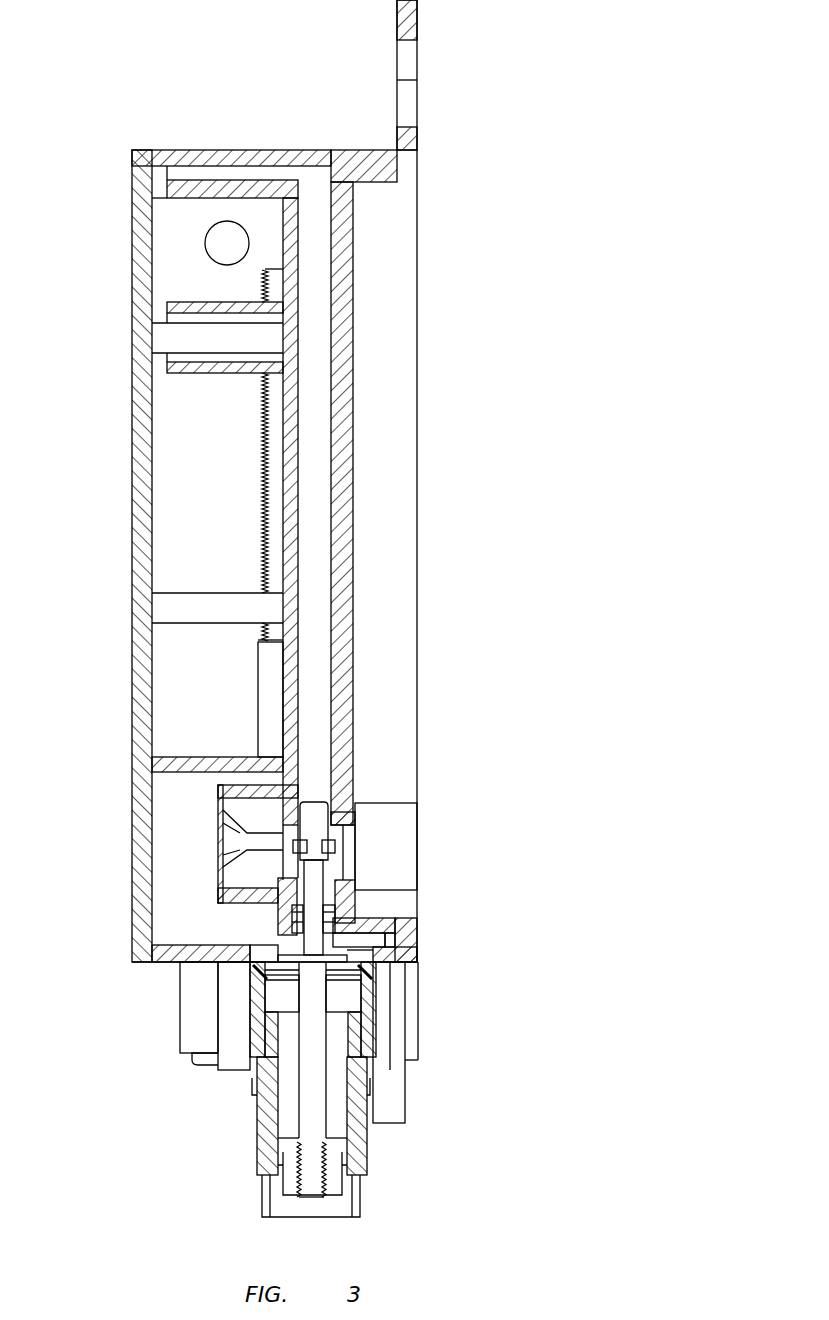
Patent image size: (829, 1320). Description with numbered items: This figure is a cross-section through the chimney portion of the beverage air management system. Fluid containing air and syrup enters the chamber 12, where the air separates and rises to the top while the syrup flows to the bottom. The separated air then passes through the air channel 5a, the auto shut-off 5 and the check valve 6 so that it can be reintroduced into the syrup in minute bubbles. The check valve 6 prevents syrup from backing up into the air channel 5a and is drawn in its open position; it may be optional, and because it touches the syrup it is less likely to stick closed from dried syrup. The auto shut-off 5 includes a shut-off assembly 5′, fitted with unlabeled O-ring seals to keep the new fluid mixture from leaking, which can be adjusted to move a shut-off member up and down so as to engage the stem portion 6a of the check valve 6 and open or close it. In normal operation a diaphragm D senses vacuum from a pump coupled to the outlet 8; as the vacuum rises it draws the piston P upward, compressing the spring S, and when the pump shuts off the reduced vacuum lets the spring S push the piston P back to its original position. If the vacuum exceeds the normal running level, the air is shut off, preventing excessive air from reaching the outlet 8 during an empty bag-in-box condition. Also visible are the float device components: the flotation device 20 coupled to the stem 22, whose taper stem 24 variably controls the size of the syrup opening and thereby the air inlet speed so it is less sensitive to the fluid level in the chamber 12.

The chamber 12 is at (162, 448).
The flotation device 20 is at (167, 308).
The stem 22 is at (265, 494).
The taper stem 24 is at (263, 708).
The air channel 5a is at (347, 513).
The outlet 8 is at (408, 822).
The check valve 6 is at (214, 868).
The stem portion 6a is at (250, 837).
The auto shut-off 5 is at (340, 840).
The diaphragm D is at (370, 978).
The shut-off assembly 5′ is at (250, 1012).
The piston P is at (297, 1060).
The spring S is at (360, 1158).